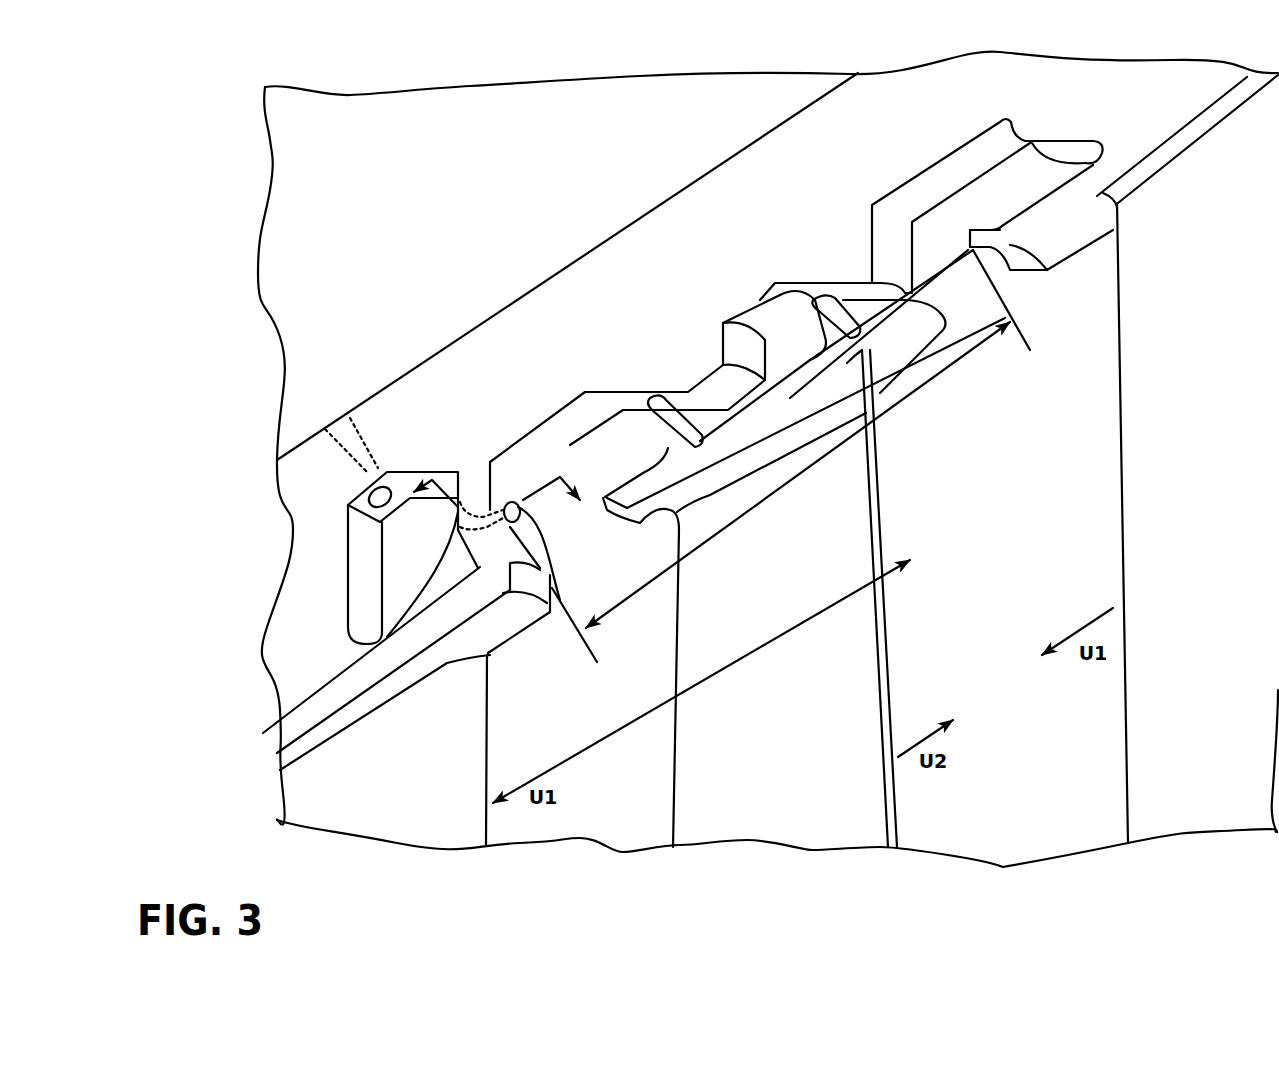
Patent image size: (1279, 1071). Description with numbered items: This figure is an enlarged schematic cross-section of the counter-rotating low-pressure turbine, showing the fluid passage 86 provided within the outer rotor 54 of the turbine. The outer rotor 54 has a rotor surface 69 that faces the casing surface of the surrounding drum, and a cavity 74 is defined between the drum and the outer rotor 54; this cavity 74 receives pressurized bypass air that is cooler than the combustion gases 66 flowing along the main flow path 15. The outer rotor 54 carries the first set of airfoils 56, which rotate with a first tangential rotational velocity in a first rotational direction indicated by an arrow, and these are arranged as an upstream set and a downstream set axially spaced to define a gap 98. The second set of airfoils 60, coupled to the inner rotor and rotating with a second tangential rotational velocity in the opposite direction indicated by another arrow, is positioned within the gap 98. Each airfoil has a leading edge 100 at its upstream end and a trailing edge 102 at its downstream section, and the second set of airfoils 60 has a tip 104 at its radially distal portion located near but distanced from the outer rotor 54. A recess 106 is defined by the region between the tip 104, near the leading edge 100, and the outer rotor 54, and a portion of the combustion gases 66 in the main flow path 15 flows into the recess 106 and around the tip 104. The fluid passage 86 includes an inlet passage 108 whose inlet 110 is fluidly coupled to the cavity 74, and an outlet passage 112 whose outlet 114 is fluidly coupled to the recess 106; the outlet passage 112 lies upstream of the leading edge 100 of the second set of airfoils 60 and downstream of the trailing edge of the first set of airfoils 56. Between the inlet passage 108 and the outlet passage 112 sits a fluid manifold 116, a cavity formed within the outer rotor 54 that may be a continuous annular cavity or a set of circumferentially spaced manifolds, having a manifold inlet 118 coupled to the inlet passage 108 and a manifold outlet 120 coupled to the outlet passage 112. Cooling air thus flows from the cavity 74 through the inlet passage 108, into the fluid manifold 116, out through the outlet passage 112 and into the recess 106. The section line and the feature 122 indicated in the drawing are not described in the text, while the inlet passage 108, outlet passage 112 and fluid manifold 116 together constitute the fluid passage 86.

The main flow path 15 is at (956, 522).
The outer rotor 54 is at (651, 296).
The first set of airfoils 56 is at (344, 794).
The second set of airfoils 60 is at (752, 728).
The combustion gases 66 is at (797, 637).
The rotor surface 69 is at (764, 137).
The cavity 74 is at (479, 197).
The fluid passage 86 is at (340, 593).
The gap 98 is at (910, 380).
The leading edge 100 is at (673, 803).
The trailing edge 102 is at (487, 825).
The tip 104 is at (790, 360).
The recess 106 is at (558, 533).
The inlet passage 108 is at (337, 463).
The inlet 110 is at (377, 467).
The outlet passage 112 is at (487, 515).
The outlet 114 is at (547, 540).
The fluid manifold 116 is at (345, 644).
The manifold inlet 118 is at (347, 545).
The manifold outlet 120 is at (364, 641).
The clip 122 is at (487, 505).